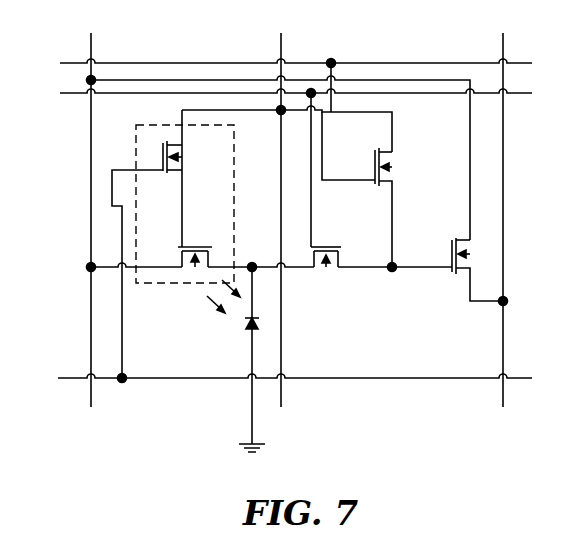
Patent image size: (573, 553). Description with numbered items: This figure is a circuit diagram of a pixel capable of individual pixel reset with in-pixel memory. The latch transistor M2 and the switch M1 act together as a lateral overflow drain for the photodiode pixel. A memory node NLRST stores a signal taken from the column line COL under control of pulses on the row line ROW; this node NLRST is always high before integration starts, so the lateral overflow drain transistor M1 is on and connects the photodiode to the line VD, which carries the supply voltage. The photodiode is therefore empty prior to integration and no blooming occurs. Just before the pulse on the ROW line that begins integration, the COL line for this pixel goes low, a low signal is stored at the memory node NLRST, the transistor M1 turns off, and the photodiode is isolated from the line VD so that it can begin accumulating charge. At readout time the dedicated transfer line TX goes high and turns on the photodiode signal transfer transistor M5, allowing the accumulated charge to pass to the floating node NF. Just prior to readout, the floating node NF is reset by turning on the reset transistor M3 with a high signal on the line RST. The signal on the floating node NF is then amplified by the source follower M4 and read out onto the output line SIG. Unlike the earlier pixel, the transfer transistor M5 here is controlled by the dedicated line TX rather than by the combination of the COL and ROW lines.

The lateral overflow drain transistor M1 is at (217, 257).
The latch transistor M2 is at (167, 138).
The reset transistor M3 is at (377, 190).
The source follower M4 is at (472, 250).
The photodiode signal transfer transistor M5 is at (349, 255).
The floating node NF is at (395, 284).
The memory node NLRST is at (205, 178).
The reset line RST is at (278, 65).
The transfer line TX is at (282, 95).
The row line ROW is at (275, 380).
The voltage line VD is at (91, 236).
The column line COL is at (284, 236).
The signal output line SIG is at (502, 236).